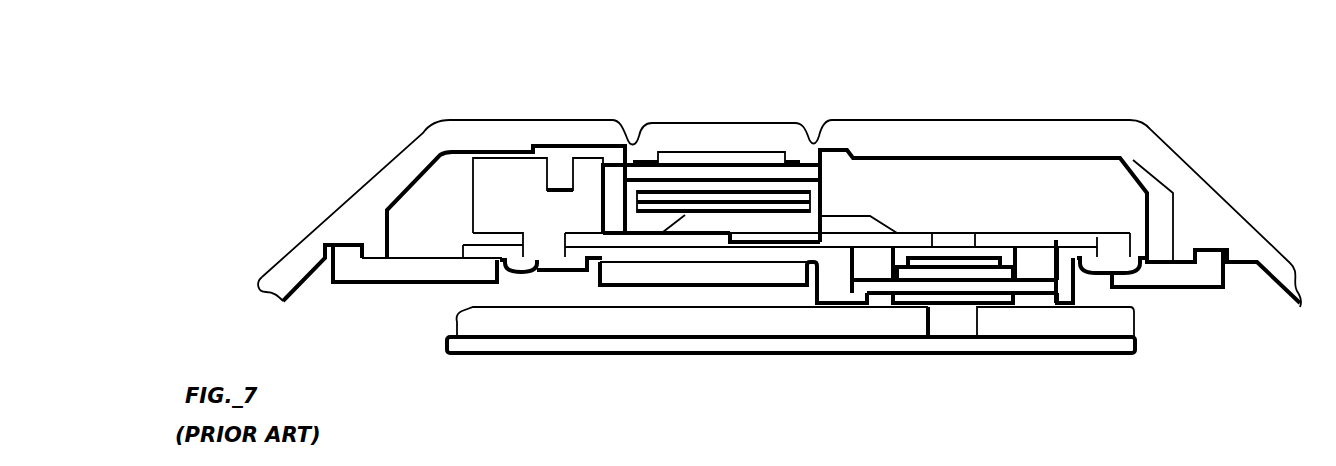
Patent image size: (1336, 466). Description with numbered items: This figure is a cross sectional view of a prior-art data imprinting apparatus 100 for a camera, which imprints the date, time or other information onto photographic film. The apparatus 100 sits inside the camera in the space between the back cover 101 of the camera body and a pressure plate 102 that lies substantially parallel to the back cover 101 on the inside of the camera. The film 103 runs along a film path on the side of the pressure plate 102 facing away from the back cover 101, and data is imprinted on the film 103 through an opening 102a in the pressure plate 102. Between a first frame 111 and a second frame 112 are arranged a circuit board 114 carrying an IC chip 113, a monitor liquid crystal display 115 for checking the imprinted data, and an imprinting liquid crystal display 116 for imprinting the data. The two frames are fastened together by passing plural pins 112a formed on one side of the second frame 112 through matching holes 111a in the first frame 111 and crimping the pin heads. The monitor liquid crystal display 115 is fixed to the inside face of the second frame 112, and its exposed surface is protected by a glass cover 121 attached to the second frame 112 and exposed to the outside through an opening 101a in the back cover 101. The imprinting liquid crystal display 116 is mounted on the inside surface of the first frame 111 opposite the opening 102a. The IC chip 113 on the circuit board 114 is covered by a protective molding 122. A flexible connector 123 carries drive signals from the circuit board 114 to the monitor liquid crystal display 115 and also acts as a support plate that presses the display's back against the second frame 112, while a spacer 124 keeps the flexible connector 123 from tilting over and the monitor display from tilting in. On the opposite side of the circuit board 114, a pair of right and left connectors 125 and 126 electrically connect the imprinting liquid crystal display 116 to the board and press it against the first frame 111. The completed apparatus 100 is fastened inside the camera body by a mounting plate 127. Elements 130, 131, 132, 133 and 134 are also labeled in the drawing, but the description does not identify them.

The data imprinting apparatus 100 is at (1048, 50).
The back cover 101 is at (407, 153).
The opening 101a is at (814, 128).
The pressure plate 102 is at (470, 327).
The opening 102a is at (977, 312).
The film 103 is at (1040, 347).
The first frame 111 is at (683, 255).
The holes 111a is at (537, 250).
The second frame 112 is at (1102, 177).
The pins 112a is at (553, 255).
The IC chip 113 is at (755, 240).
The circuit board 114 is at (622, 245).
The monitor liquid crystal display 115 is at (740, 172).
The imprinting liquid crystal display 116 is at (887, 288).
The glass cover 121 is at (798, 137).
The molding 122 is at (830, 240).
The flexible connector 123 is at (613, 197).
The spacer 124 is at (678, 207).
The connector 125 is at (875, 257).
The connector 126 is at (1028, 257).
The mounting plate 127 is at (372, 272).
The substrate assembly 130 is at (1217, 297).
The upper substrate layer 131 is at (1007, 272).
The lower substrate layer 132 is at (1047, 290).
The chip 133 is at (950, 262).
The lower chip 134 is at (952, 297).